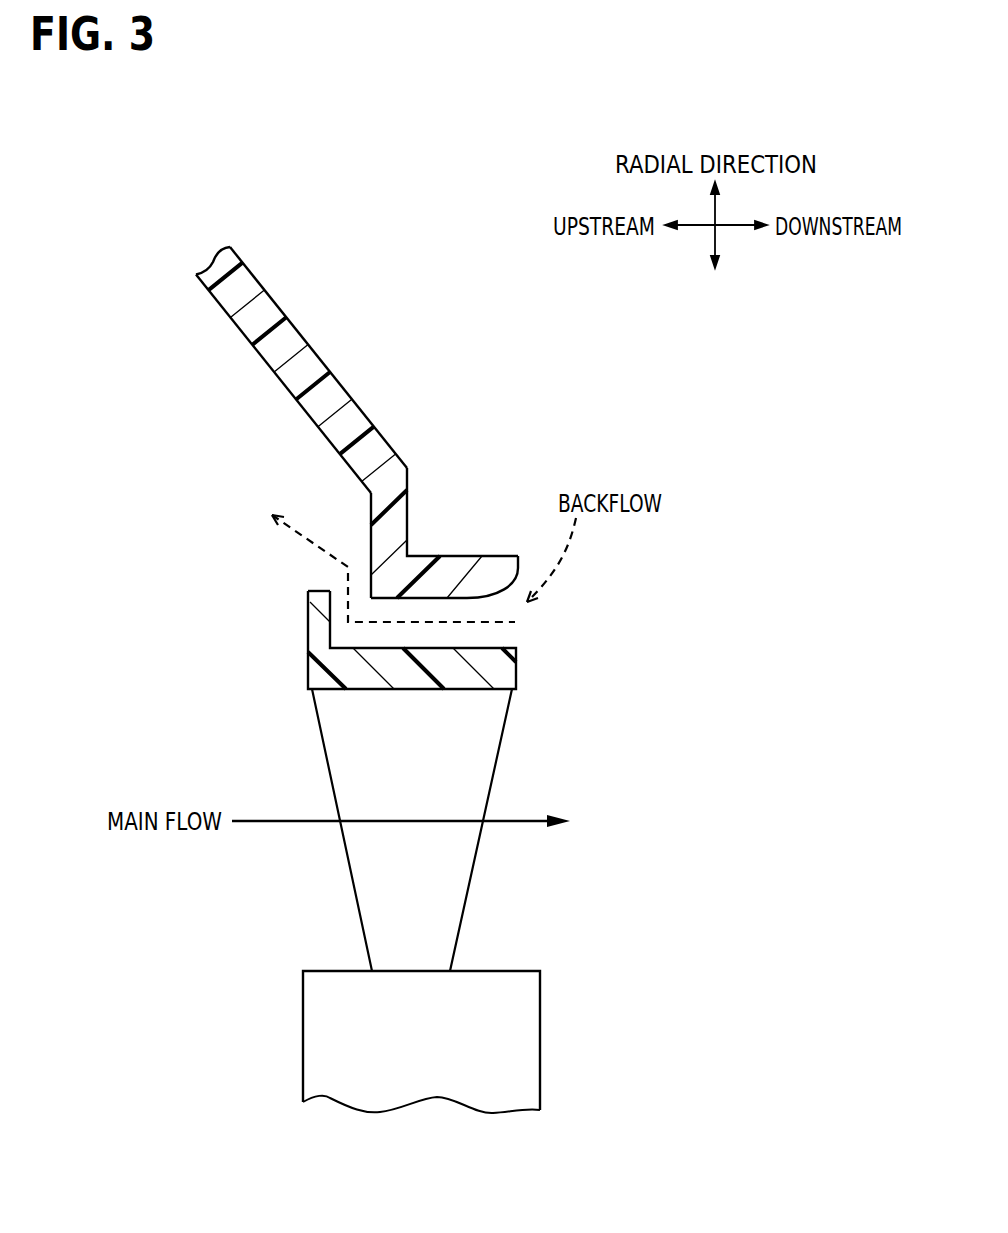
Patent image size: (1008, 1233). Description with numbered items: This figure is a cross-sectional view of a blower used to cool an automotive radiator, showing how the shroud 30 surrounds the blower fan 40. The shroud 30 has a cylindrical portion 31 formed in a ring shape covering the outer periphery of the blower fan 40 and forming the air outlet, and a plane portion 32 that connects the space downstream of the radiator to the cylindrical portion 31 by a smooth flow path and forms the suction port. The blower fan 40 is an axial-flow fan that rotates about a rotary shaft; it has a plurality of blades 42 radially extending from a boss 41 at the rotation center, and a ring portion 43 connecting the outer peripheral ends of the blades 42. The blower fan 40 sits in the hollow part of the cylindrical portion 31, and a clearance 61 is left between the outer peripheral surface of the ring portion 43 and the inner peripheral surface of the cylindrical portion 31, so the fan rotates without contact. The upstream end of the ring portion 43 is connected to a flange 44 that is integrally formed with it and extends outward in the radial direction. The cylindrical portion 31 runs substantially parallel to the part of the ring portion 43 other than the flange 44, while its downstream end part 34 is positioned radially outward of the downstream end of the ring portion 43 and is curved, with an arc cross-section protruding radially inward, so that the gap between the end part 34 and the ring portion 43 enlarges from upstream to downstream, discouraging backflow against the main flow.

The shroud 30 is at (372, 428).
The cylindrical portion 31 is at (459, 522).
The plane portion 32 is at (330, 395).
The end part 34 is at (518, 572).
The clearance 61 is at (435, 610).
The blower fan 40 is at (428, 852).
The boss 41 is at (502, 1052).
The blades 42 is at (437, 908).
The ring portion 43 is at (402, 665).
The flange 44 is at (318, 623).